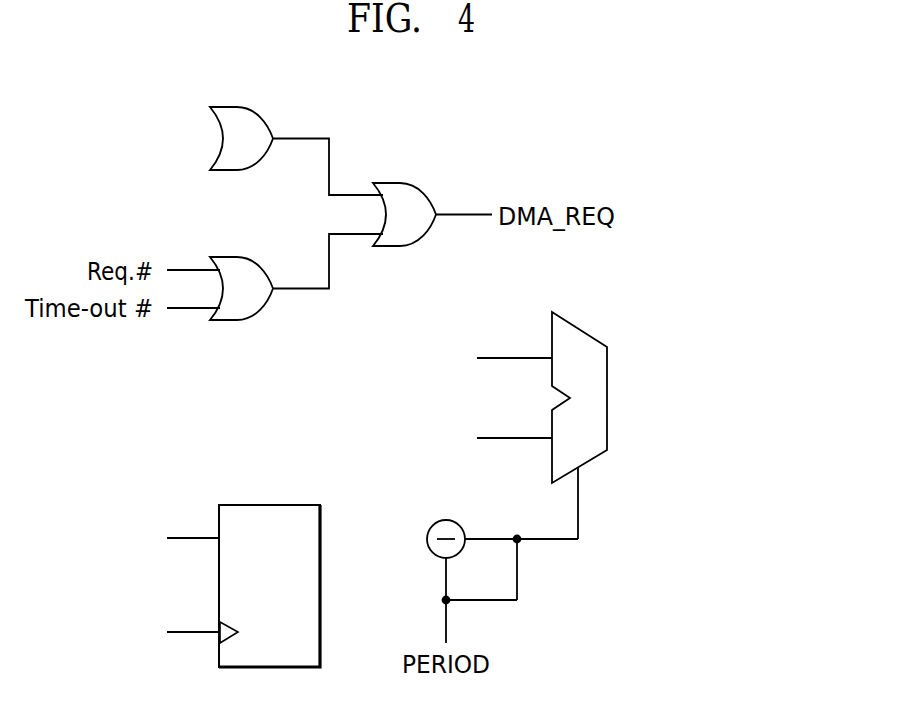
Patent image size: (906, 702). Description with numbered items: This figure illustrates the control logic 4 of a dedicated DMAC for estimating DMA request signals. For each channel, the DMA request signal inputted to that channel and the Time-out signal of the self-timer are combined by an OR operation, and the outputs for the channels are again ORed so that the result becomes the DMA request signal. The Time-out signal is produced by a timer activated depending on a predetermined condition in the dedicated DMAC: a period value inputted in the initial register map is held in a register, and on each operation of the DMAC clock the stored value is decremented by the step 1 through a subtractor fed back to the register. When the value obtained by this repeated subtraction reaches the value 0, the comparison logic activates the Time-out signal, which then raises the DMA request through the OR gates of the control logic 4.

The OR gate for channel 0 request/time-out 0 is at (220, 122).
The counter register producing n+ 1 is at (427, 538).
The comparator/multiplexer producing TIME-OUT 4 is at (607, 398).